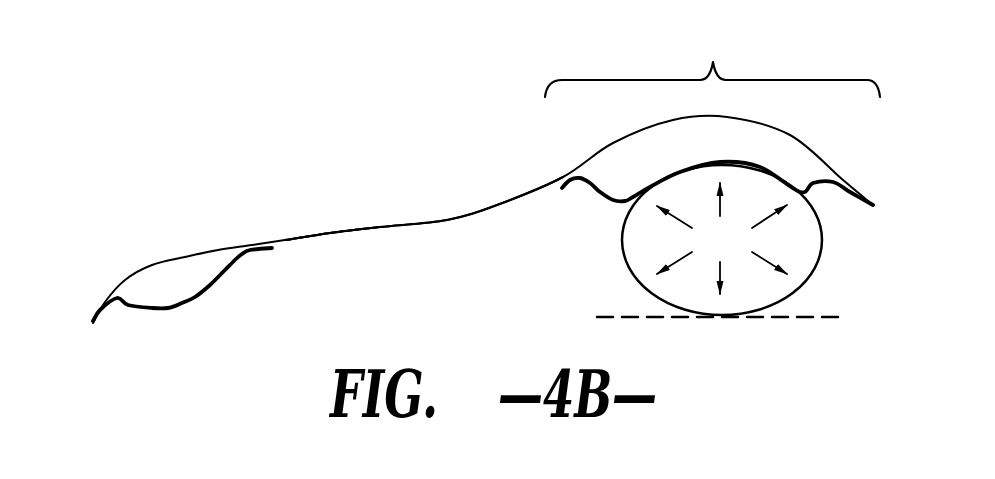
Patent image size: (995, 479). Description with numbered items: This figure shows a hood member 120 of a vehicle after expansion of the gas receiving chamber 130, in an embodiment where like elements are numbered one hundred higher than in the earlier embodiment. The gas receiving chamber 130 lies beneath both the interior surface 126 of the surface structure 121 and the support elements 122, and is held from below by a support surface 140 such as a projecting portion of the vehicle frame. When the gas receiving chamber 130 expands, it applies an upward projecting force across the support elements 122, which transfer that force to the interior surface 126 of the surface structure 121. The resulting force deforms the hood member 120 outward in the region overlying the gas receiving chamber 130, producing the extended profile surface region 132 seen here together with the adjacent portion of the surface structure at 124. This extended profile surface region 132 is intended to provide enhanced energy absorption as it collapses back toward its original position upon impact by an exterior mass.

The hood member 120 is at (246, 183).
The surface structure 121 is at (349, 225).
The support elements 122 is at (170, 310).
The body panel transition 124 is at (495, 203).
The interior surface 126 is at (323, 235).
The gas receiving chamber 130 is at (813, 263).
The extended profile surface region 132 is at (712, 62).
The support surface 140 is at (625, 315).